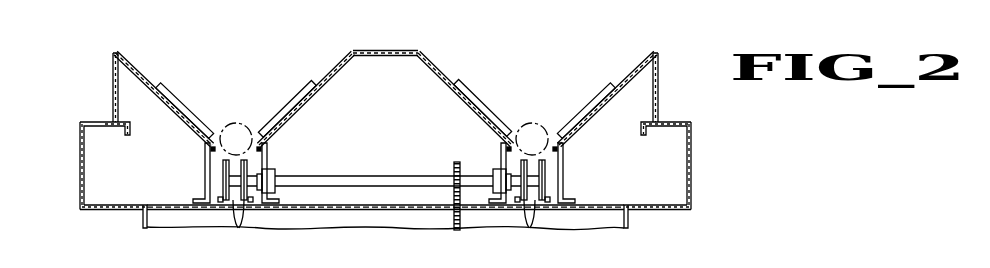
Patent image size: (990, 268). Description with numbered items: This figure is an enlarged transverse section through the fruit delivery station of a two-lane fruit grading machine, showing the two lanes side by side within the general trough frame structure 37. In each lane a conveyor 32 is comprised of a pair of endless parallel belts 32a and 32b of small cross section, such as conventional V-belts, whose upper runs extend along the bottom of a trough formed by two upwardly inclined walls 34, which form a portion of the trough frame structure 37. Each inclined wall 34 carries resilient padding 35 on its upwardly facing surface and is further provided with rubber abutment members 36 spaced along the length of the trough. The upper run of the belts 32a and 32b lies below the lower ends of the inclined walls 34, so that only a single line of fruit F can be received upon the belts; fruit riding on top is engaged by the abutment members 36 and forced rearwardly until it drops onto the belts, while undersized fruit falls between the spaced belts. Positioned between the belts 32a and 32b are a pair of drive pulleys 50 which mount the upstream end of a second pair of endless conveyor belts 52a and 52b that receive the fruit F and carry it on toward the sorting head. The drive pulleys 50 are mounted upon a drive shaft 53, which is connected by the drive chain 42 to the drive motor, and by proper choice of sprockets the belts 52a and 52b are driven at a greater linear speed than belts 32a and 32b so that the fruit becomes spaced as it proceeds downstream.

The conveyor 32 is at (203, 163).
The endless belt 32a is at (262, 156).
The endless belt 32b is at (214, 154).
The inclined wall 34 is at (171, 100).
The resilient padding 35 is at (136, 71).
The rubber abutment member 36 is at (170, 92).
The trough frame structure 37 is at (668, 102).
The drive chain 42 is at (455, 229).
The drive pulley 50 is at (385, 225).
The endless conveyor belt 52a is at (247, 170).
The endless conveyor belt 52b is at (223, 189).
The drive shaft 53 is at (378, 183).
The fruit F is at (237, 122).